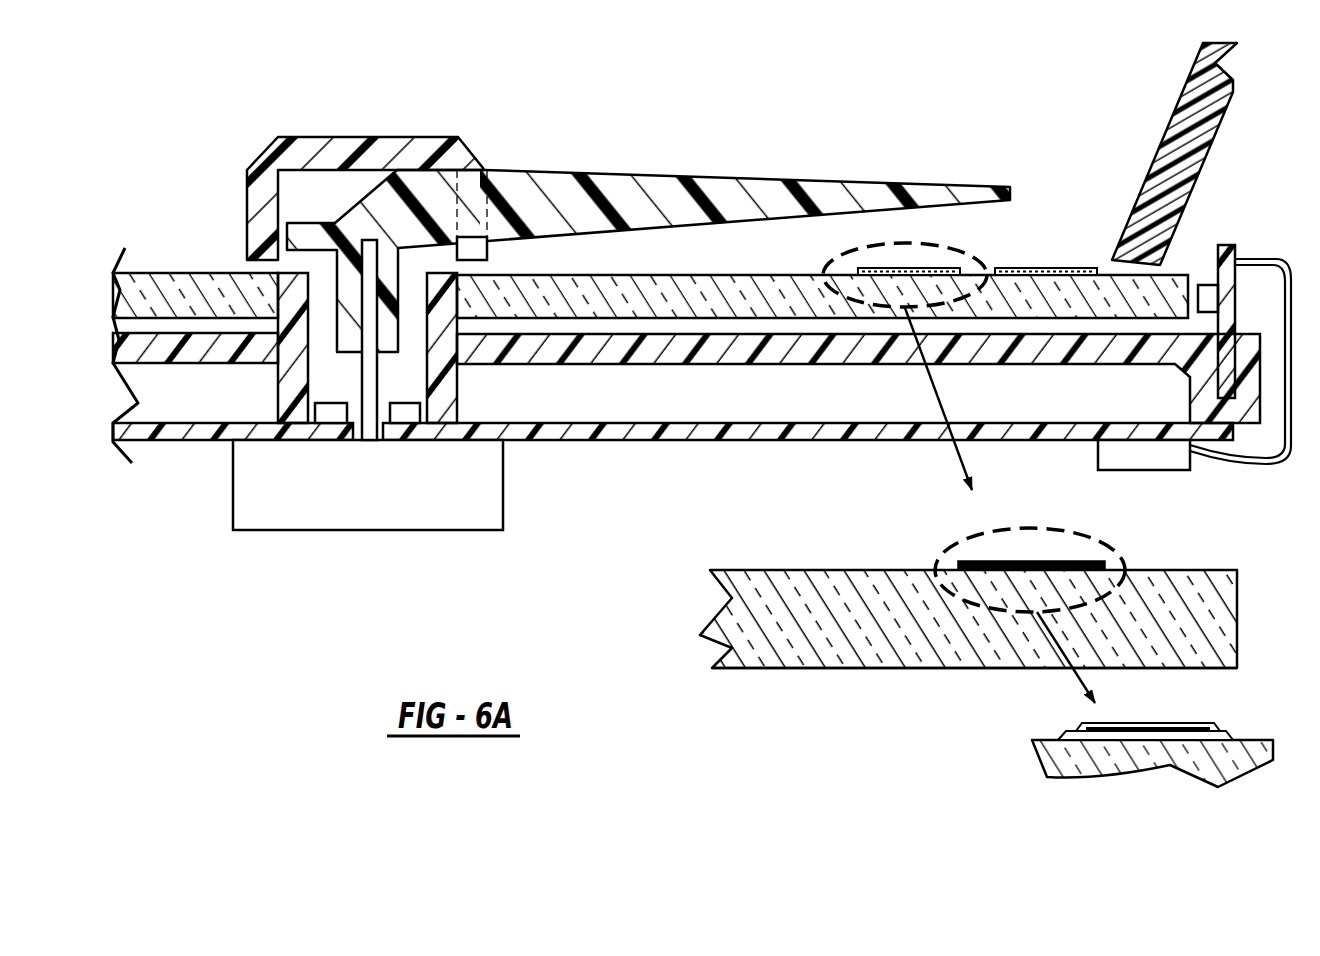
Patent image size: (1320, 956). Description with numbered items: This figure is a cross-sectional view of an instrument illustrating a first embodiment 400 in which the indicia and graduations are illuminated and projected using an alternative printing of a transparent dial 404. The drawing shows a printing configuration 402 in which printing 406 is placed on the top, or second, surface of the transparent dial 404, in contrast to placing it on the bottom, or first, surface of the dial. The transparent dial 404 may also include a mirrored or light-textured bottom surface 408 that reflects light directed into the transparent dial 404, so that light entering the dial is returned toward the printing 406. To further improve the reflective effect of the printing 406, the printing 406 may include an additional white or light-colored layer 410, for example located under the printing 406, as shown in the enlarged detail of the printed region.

The first embodiment 400 is at (311, 91).
The printing configuration 402 is at (965, 250).
The transparent dial 404 is at (1240, 625).
The printing 406 is at (1032, 558).
The bottom surface 408 is at (898, 670).
The white or light-colored layer 410 is at (1145, 748).